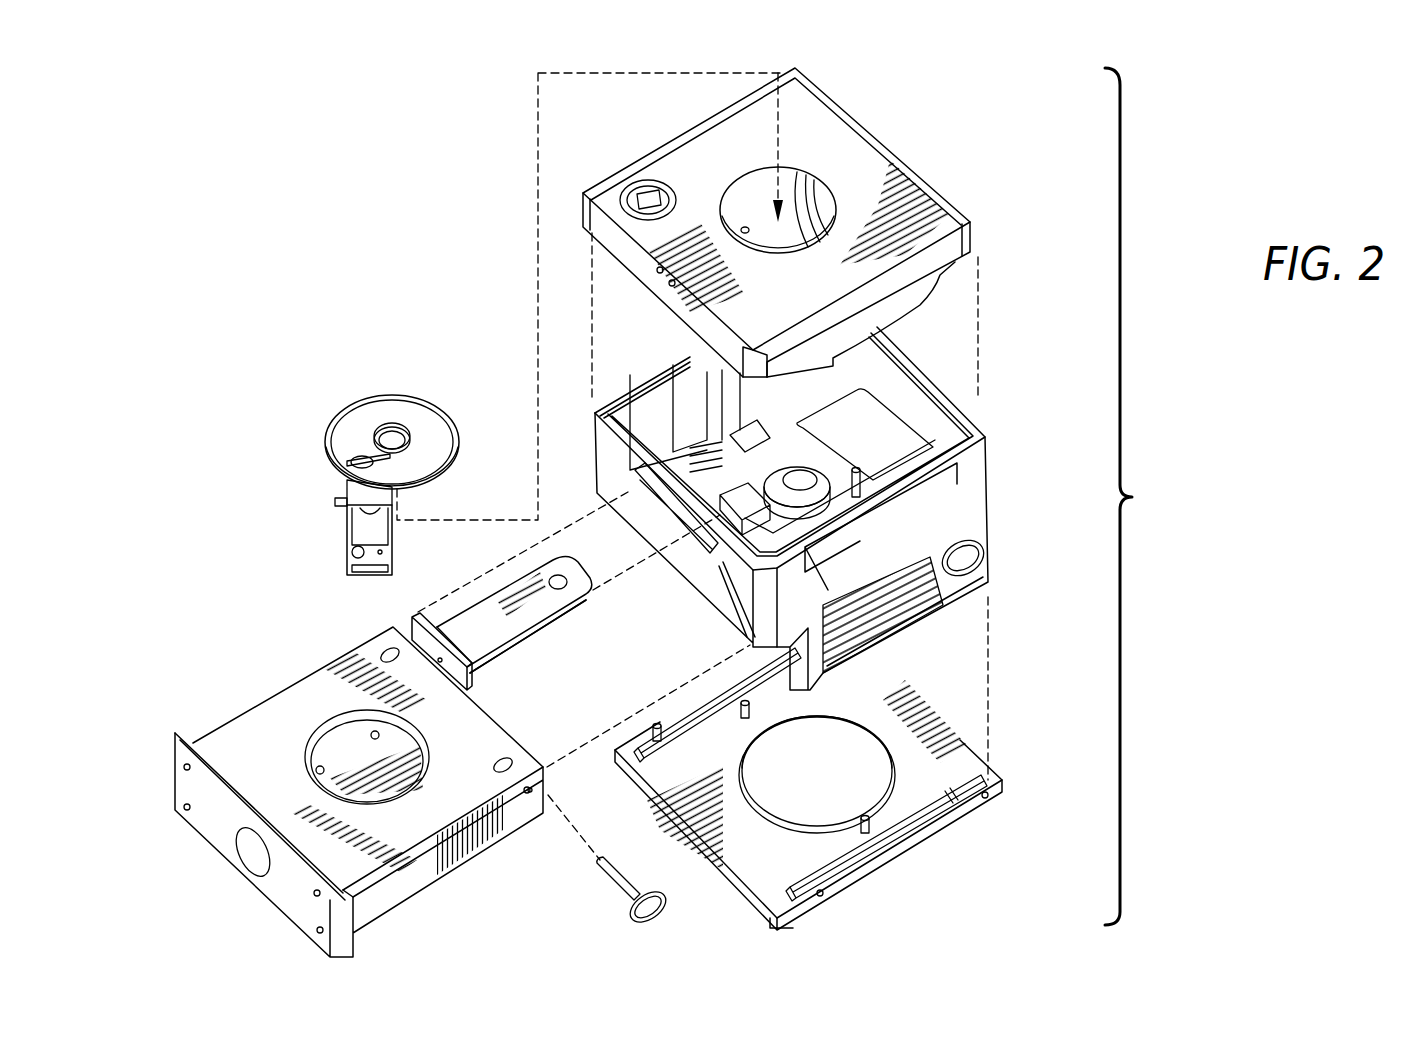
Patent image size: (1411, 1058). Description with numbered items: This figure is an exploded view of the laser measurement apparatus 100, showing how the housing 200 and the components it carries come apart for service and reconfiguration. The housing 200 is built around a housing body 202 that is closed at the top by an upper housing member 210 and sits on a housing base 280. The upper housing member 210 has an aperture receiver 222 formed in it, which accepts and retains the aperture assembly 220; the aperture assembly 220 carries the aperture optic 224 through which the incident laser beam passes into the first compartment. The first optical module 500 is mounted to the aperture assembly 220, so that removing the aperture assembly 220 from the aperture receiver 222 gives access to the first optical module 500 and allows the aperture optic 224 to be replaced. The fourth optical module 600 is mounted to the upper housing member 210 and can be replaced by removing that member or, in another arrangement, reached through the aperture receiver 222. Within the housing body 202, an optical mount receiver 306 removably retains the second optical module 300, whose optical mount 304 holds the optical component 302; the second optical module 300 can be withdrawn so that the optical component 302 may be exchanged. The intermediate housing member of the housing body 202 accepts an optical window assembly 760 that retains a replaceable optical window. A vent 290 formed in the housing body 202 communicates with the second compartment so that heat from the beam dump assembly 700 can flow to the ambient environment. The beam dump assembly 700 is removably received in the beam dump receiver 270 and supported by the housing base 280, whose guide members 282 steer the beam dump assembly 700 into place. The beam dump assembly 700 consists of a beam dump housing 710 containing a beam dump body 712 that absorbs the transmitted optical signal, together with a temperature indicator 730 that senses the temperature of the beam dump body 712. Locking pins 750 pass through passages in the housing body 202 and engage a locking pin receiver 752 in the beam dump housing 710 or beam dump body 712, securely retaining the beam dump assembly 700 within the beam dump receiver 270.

The laser measurement apparatus 100 is at (266, 208).
The housing 200 is at (1141, 496).
The housing body 202 is at (821, 508).
The upper housing member 210 is at (922, 182).
The aperture assembly 220 is at (363, 413).
The aperture receiver 222 is at (740, 200).
The aperture optic 224 is at (393, 440).
The beam dump receiver 270 is at (698, 622).
The housing base 280 is at (967, 817).
The guide member 282 is at (838, 865).
The vent 290 is at (903, 617).
The second optical module 300 is at (492, 593).
The optical component 302 is at (565, 588).
The optical mount 304 is at (507, 622).
The optical mount receiver 306 is at (727, 490).
The first optical module 500 is at (355, 525).
The fourth optical module 600 is at (807, 187).
The beam dump assembly 700 is at (176, 615).
The beam dump housing 710 is at (222, 725).
The beam dump body 712 is at (285, 713).
The temperature indicator 730 is at (250, 852).
The locking pin 750 is at (610, 882).
The locking pin receiver 752 is at (530, 790).
The optical window assembly 760 is at (810, 467).